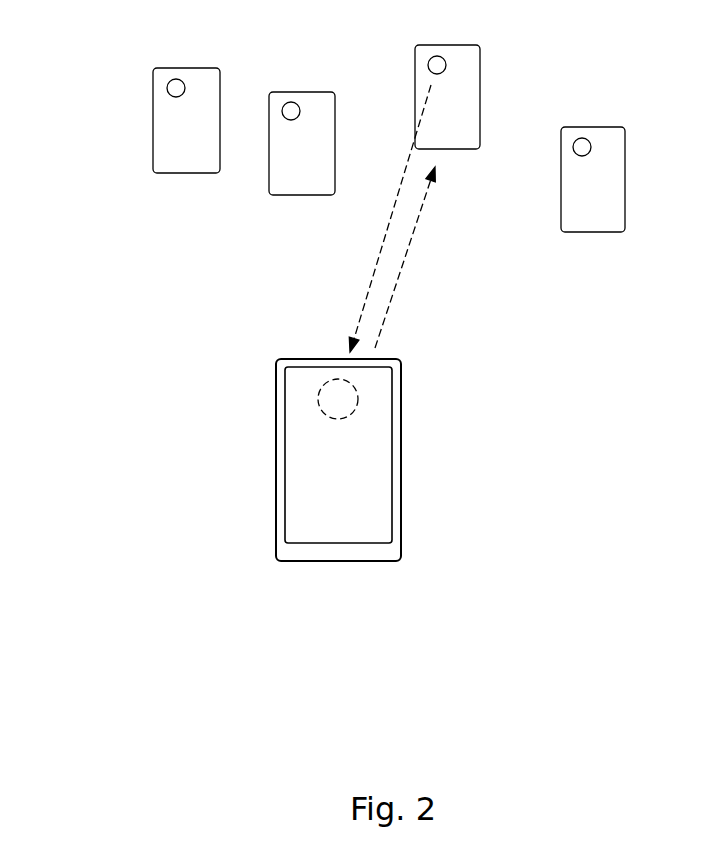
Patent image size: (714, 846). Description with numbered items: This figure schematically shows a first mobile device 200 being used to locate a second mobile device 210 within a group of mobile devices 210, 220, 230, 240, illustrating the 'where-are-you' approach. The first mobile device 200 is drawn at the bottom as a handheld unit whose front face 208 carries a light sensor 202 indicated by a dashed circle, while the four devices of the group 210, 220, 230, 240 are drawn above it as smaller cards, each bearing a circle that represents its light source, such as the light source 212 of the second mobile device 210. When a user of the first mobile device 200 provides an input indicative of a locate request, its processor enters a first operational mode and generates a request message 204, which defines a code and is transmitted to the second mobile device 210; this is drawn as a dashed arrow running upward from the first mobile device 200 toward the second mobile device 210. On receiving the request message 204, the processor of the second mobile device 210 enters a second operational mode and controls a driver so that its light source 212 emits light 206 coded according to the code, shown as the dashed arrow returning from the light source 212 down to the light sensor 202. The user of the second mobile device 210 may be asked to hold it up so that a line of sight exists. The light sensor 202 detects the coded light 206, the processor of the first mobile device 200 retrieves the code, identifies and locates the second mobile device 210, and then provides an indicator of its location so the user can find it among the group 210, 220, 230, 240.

The first mobile device 200 is at (277, 539).
The light sensor 202 is at (328, 402).
The request message 204 is at (390, 308).
The light 206 is at (372, 265).
The display screen 208 is at (300, 469).
The second mobile device 210 is at (457, 83).
The light source 212 is at (427, 63).
The mobile device 220 is at (177, 121).
The mobile device 230 is at (282, 187).
The mobile device 240 is at (602, 213).